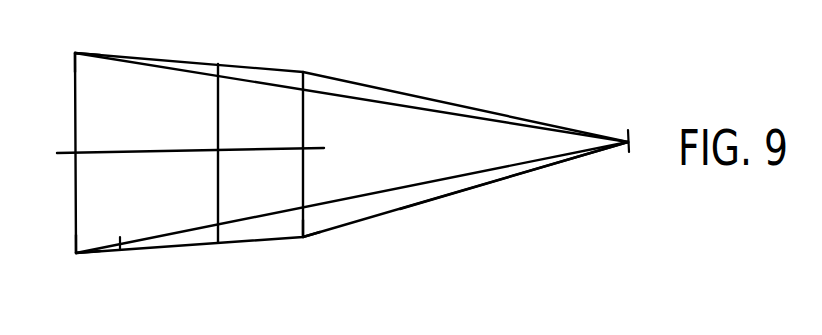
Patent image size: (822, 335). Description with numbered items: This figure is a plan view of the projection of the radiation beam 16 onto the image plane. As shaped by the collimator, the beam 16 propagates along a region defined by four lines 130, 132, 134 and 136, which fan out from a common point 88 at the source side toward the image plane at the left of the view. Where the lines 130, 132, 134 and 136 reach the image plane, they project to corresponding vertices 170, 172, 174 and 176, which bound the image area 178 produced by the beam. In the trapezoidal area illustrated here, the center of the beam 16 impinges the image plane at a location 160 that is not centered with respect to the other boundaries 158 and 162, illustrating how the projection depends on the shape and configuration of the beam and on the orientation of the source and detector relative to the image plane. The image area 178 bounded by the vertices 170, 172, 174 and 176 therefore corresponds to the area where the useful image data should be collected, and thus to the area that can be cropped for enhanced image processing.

The beam 16 is at (465, 190).
The apex point 88 is at (629, 140).
The line 130 is at (355, 96).
The line 132 is at (408, 188).
The line 134 is at (370, 216).
The line 136 is at (468, 105).
The boundary 158 is at (304, 171).
The location 160 is at (216, 154).
The boundary 162 is at (75, 197).
The vertex 170 is at (75, 53).
The vertex 172 is at (77, 254).
The vertex 174 is at (304, 238).
The vertex 176 is at (303, 72).
The image area 178 is at (120, 249).